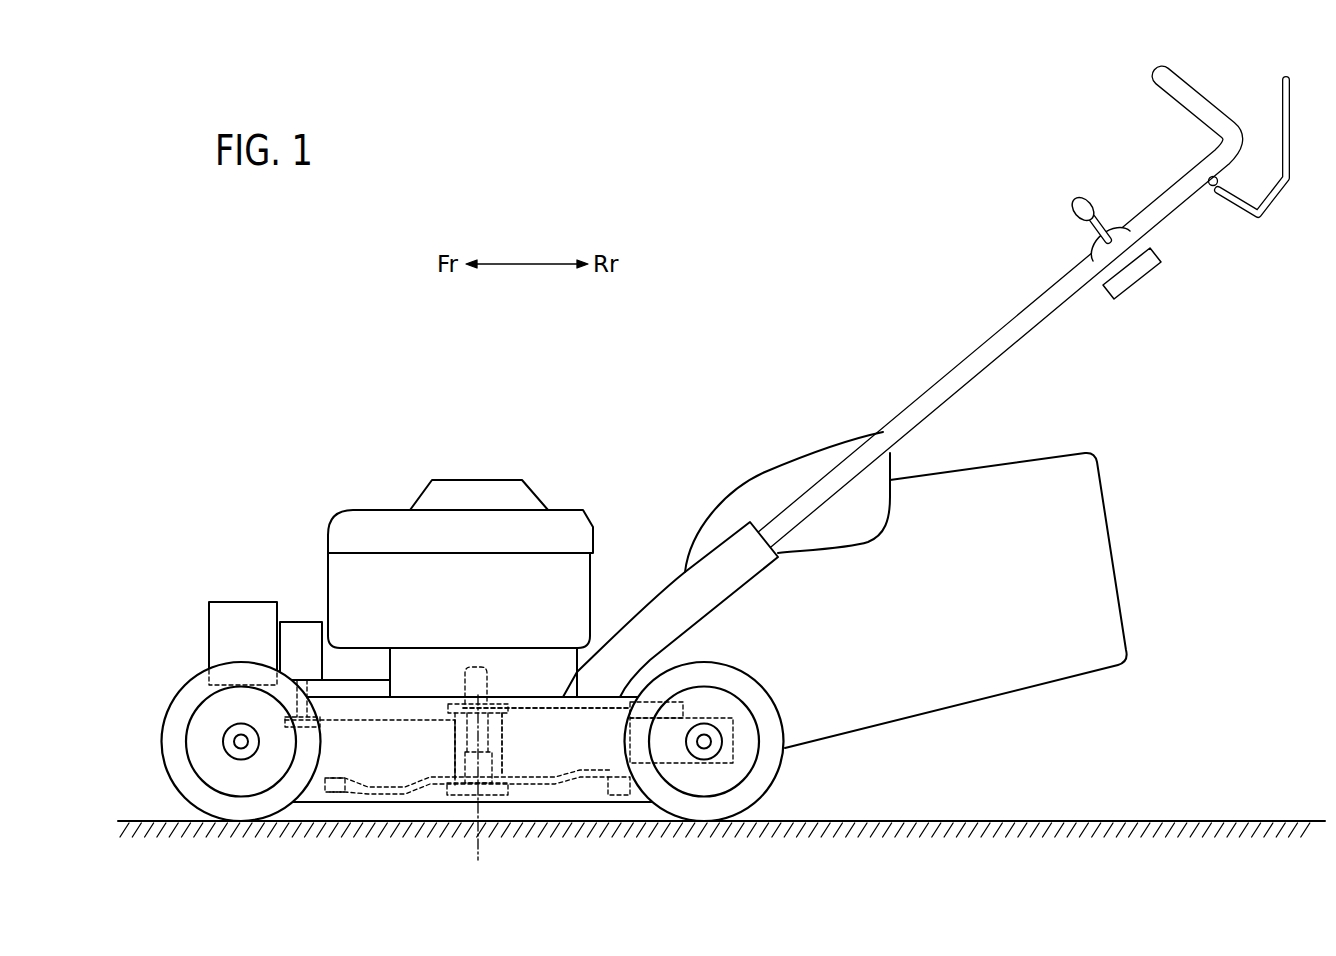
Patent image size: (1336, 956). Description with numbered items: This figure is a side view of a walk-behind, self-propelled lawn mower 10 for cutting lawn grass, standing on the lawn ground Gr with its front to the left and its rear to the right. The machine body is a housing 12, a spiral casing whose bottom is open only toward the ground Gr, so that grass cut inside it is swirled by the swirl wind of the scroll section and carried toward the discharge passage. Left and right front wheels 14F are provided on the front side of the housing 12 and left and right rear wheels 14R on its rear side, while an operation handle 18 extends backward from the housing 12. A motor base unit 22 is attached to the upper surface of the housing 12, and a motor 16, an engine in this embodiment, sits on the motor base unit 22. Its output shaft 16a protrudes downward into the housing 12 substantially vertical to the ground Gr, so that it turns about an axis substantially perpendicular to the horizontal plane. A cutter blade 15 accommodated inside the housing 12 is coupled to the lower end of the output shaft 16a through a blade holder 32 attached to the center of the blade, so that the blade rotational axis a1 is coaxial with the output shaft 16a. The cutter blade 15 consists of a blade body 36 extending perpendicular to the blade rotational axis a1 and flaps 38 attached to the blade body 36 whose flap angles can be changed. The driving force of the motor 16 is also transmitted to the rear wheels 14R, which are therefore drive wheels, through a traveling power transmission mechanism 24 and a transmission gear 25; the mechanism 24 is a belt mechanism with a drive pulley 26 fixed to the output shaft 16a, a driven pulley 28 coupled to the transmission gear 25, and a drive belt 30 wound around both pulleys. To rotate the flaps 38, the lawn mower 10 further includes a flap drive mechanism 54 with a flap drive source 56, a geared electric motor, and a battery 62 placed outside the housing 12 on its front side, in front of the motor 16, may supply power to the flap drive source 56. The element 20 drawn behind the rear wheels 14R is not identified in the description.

The lawn mower 10 is at (353, 390).
The housing 12 is at (373, 696).
The front wheels 14F is at (172, 710).
The rear wheels 14R is at (777, 762).
The cutter blade 15 is at (555, 575).
The motor 16 is at (455, 479).
The output shaft 16a is at (490, 668).
The operation handle 18 is at (1000, 352).
The grass bag 20 is at (1092, 550).
The motor base unit 22 is at (405, 668).
The traveling power transmission mechanism 24 is at (588, 713).
The transmission gear 25 is at (735, 718).
The drive pulley 26 is at (448, 704).
The driven pulley 28 is at (655, 701).
The drive belt 30 is at (548, 696).
The blade holder 32 is at (500, 796).
The blade body 36 is at (418, 795).
The flaps 38 is at (343, 793).
The flap drive mechanism 54 is at (442, 735).
The flap drive source 56 is at (302, 621).
The battery 62 is at (226, 604).
The blade rotational axis a1 is at (481, 790).
The ground Gr is at (1236, 820).